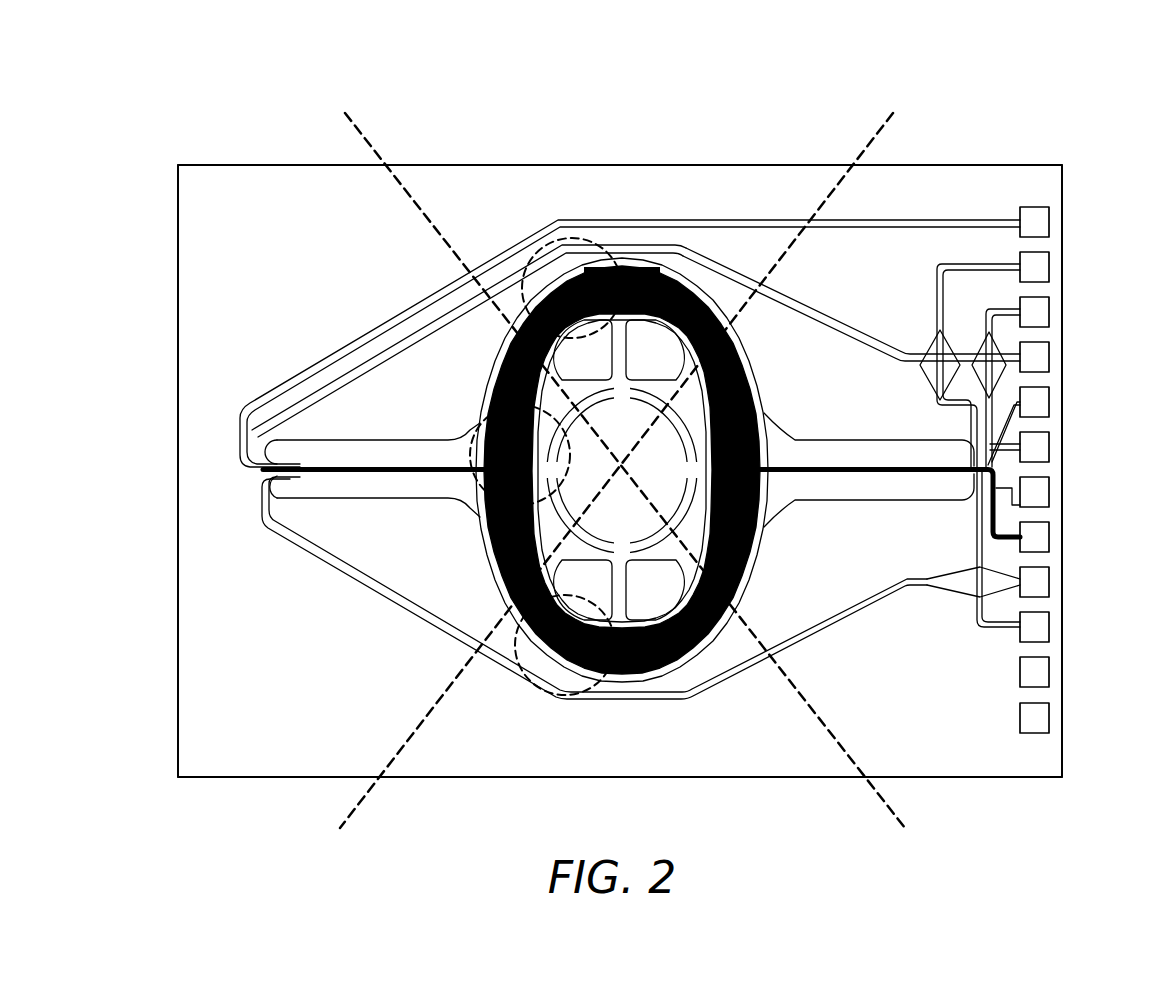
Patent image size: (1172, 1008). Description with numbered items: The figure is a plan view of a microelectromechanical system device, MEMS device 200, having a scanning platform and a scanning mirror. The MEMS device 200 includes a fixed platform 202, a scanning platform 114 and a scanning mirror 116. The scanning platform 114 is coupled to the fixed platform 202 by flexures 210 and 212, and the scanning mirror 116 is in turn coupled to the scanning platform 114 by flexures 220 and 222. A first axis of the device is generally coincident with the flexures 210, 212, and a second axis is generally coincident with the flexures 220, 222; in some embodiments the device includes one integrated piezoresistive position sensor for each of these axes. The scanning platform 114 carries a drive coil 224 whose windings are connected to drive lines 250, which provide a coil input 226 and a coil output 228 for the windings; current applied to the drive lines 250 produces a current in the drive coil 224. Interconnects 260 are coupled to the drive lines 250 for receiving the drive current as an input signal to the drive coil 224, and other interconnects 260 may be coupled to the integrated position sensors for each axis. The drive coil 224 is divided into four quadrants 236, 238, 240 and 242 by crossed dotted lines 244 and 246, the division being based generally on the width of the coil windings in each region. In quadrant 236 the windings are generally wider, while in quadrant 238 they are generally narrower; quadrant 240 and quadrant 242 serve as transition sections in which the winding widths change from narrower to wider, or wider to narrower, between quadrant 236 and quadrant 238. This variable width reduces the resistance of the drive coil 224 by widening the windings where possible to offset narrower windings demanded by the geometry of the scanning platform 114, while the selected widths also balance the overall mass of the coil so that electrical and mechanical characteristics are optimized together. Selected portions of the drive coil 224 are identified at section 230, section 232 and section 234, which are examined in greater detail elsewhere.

The MEMS device 200 is at (1048, 94).
The fixed platform 202 is at (264, 265).
The scanning platform 114 is at (748, 585).
The scanning mirror 116 is at (602, 515).
The flexure 210 is at (394, 466).
The flexure 212 is at (852, 466).
The flexure 220 is at (635, 322).
The flexure 222 is at (635, 615).
The drive coil 224 is at (650, 265).
The coil input 226 is at (344, 466).
The coil output 228 is at (908, 466).
The section 230 is at (480, 426).
The section 232 is at (548, 240).
The section 234 is at (541, 698).
The quadrant 236 is at (604, 212).
The quadrant 238 is at (604, 742).
The quadrant 240 is at (431, 367).
The quadrant 242 is at (769, 367).
The dotted line 244 is at (616, 455).
The dotted line 246 is at (624, 455).
The drive lines 250 is at (905, 221).
The interconnects 260 is at (1078, 207).